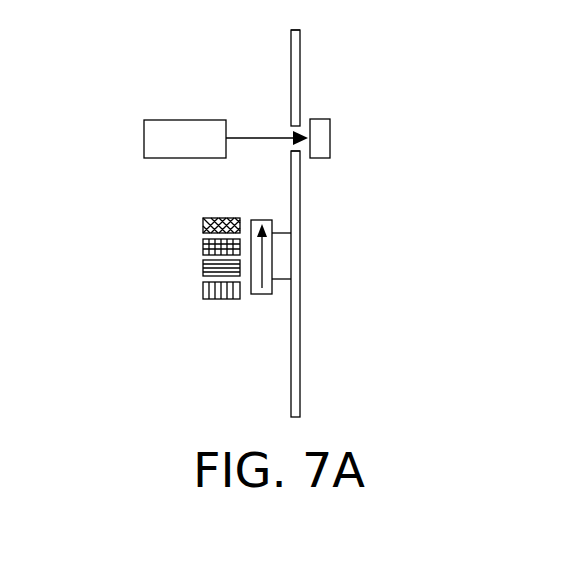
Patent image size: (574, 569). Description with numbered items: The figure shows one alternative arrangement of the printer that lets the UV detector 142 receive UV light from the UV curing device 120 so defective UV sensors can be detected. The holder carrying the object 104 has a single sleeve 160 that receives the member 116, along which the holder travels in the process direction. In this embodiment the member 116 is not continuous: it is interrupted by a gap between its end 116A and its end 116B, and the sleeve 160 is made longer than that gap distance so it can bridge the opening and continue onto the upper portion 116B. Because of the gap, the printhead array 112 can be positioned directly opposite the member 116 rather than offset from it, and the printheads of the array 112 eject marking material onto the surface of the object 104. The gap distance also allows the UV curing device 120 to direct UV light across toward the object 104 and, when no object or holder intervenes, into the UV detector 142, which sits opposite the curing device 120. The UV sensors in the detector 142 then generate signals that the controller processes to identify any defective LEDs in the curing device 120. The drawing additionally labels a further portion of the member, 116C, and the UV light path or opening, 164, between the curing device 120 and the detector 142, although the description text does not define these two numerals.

The object 104 is at (262, 296).
The printhead array 112 is at (183, 261).
The member 116 is at (300, 365).
The end of the member 116A is at (292, 152).
The end of the member 116B is at (301, 124).
The wall top edge 116C is at (290, 48).
The UV curing device 120 is at (187, 120).
The UV detector 142 is at (320, 118).
The sleeve 160 is at (286, 281).
The aperture 164 is at (275, 118).